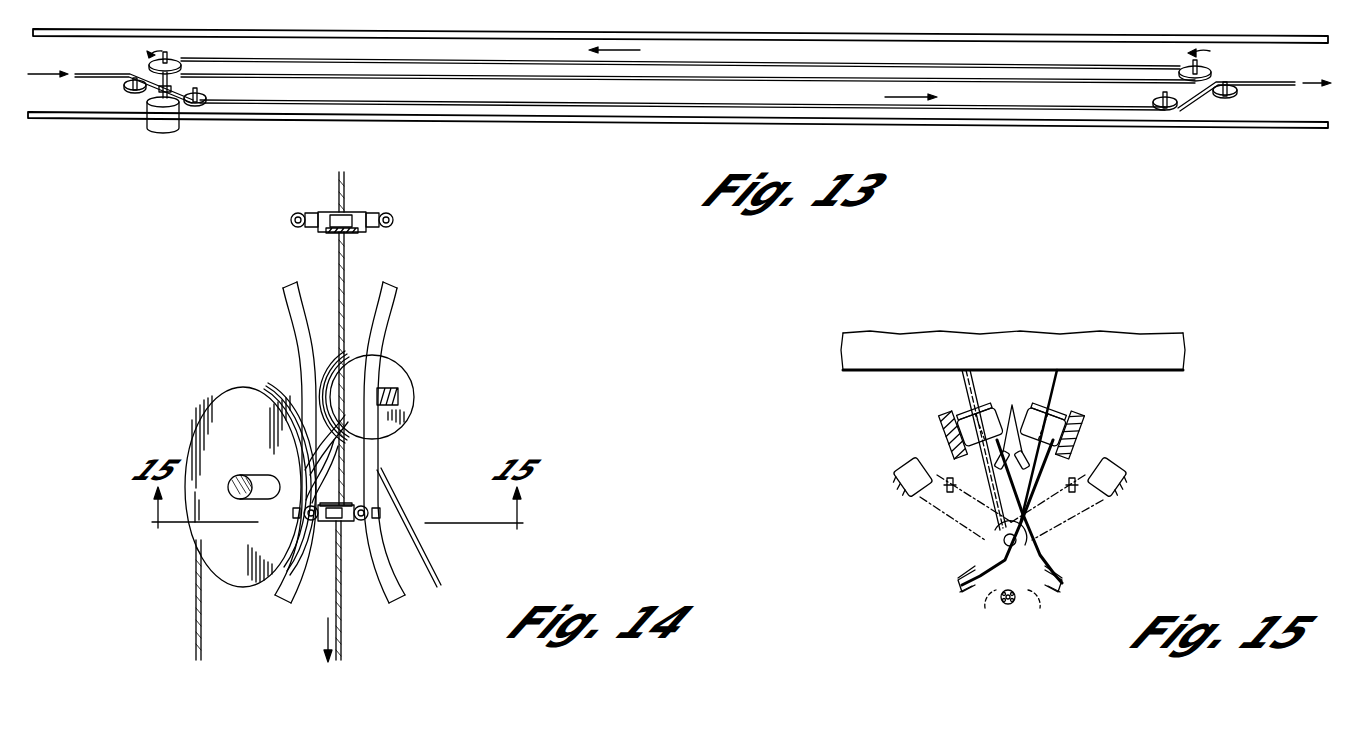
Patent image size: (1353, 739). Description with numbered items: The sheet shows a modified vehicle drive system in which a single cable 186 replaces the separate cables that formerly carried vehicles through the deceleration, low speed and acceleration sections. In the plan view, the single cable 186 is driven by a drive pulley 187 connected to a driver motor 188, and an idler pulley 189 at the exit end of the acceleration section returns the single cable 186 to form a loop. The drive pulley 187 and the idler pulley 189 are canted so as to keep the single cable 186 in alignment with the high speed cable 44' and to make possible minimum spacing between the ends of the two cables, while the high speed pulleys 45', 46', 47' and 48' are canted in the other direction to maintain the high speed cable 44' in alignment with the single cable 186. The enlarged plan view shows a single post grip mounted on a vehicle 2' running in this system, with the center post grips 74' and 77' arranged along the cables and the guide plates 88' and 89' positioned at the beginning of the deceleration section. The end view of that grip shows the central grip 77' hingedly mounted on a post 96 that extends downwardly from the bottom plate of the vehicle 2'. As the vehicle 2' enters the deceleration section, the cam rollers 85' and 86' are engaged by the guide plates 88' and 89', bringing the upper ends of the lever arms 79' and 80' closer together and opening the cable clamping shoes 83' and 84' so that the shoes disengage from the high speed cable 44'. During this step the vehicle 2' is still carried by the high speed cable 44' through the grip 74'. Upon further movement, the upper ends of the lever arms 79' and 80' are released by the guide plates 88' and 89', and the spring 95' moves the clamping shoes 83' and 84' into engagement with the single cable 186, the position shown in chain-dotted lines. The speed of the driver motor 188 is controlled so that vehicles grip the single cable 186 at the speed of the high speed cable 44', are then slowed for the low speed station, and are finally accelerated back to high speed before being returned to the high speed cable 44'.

In FIG. 15, the vehicle 2' is at (1018, 334).
In FIG. 13, the high speed cable 44' is at (698, 80).
In FIG. 14, the high speed cable 44' is at (378, 338).
In FIG. 13, the high speed pulley 45' is at (107, 93).
In FIG. 14, the high speed pulley 45' is at (391, 391).
In FIG. 13, the high speed pulley 46' is at (216, 121).
In FIG. 13, the high speed pulley 47' is at (1187, 123).
In FIG. 13, the high speed pulley 48' is at (1248, 98).
In FIG. 14, the center post grip 74' is at (354, 202).
In FIG. 14, the center post grip 77' is at (372, 494).
In FIG. 15, the center post grip 77' is at (975, 539).
In FIG. 15, the lever arm 79' is at (979, 509).
In FIG. 15, the lever arm 80' is at (1046, 509).
In FIG. 15, the cable clamping shoe 83' is at (948, 601).
In FIG. 15, the cable clamping shoe 84' is at (1073, 593).
In FIG. 14, the cam roller 85' is at (286, 528).
In FIG. 15, the cam roller 85' is at (950, 413).
In FIG. 14, the cam roller 86' is at (402, 504).
In FIG. 15, the cam roller 86' is at (1073, 413).
In FIG. 14, the guide plate 88' is at (273, 442).
In FIG. 15, the guide plate 88' is at (932, 430).
In FIG. 14, the guide plate 89' is at (410, 442).
In FIG. 15, the guide plate 89' is at (1092, 430).
In FIG. 15, the spring 95' is at (1010, 458).
In FIG. 15, the post 96 is at (979, 378).
In FIG. 13, the single cable 186 is at (326, 58).
In FIG. 14, the single cable 186 is at (342, 636).
In FIG. 15, the single cable 186 is at (1007, 606).
In FIG. 13, the drive pulley 187 is at (175, 63).
In FIG. 14, the drive pulley 187 is at (215, 412).
In FIG. 13, the driver motor 188 is at (162, 128).
In FIG. 13, the idler pulley 189 is at (1205, 70).